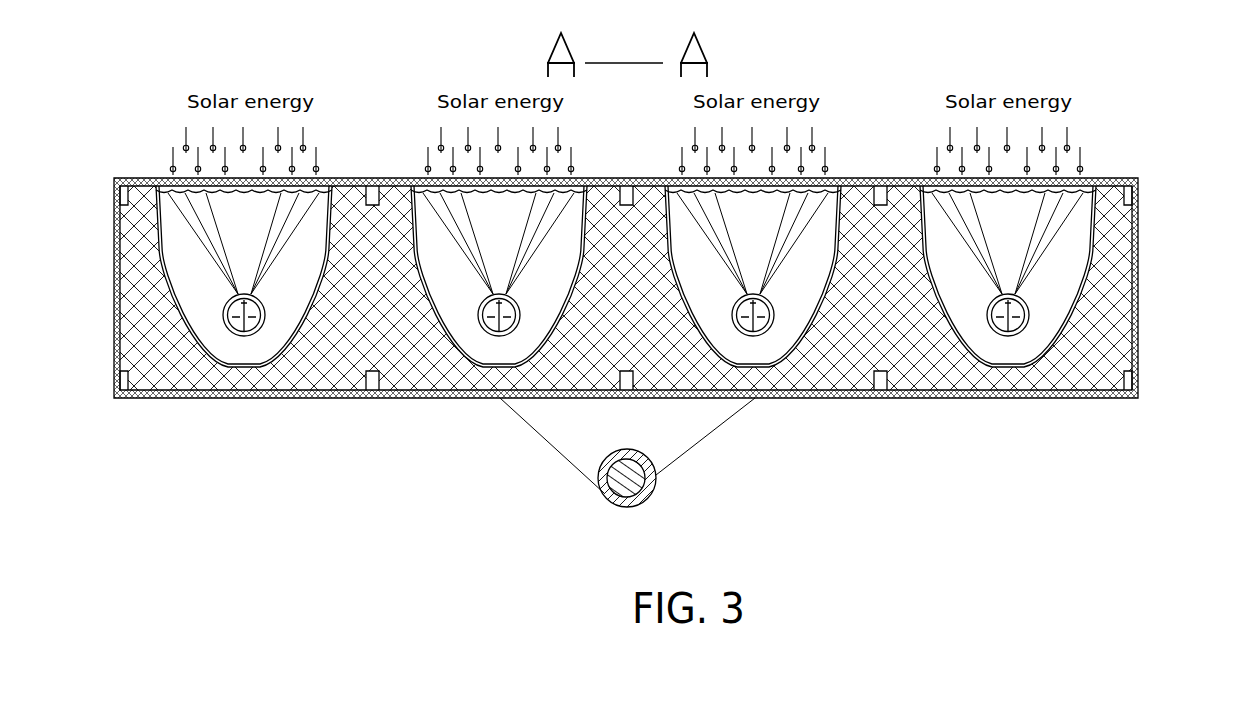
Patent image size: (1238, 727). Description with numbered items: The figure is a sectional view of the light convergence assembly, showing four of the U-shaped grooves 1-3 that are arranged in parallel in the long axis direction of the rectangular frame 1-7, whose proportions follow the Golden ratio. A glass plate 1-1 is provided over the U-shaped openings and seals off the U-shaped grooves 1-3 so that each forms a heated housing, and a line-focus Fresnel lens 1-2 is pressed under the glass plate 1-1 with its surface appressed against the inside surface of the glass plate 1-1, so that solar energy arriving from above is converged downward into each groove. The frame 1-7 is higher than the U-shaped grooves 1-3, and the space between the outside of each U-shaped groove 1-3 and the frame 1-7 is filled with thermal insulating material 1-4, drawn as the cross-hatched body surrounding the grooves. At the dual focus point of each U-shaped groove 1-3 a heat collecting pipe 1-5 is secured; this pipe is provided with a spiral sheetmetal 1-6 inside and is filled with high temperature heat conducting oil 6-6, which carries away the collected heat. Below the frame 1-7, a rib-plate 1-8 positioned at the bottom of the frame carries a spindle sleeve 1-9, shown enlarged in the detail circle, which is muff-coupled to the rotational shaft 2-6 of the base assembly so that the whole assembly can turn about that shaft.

The glass plate 1-1 is at (1103, 182).
The line-focus Fresnel lens 1-2 is at (1103, 190).
The U-shaped groove 1-3 is at (1104, 220).
The thermal insulating material 1-4 is at (1119, 248).
The heat collecting pipe 1-5 is at (1029, 312).
The spiral sheetmetal 1-6 is at (1022, 322).
The high temperature heat conducting oil 6-6 is at (1020, 327).
The frame 1-7 is at (885, 398).
The rib-plate 1-8 is at (687, 430).
The spindle sleeve 1-9 is at (644, 470).
The rotational shaft 2-6 is at (650, 497).